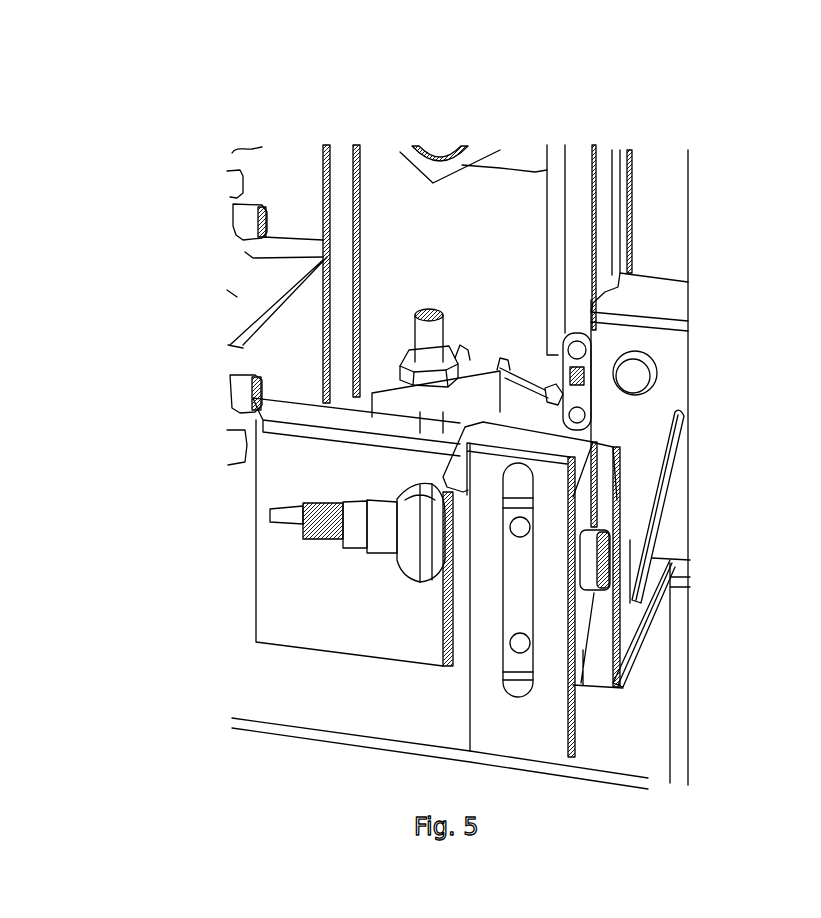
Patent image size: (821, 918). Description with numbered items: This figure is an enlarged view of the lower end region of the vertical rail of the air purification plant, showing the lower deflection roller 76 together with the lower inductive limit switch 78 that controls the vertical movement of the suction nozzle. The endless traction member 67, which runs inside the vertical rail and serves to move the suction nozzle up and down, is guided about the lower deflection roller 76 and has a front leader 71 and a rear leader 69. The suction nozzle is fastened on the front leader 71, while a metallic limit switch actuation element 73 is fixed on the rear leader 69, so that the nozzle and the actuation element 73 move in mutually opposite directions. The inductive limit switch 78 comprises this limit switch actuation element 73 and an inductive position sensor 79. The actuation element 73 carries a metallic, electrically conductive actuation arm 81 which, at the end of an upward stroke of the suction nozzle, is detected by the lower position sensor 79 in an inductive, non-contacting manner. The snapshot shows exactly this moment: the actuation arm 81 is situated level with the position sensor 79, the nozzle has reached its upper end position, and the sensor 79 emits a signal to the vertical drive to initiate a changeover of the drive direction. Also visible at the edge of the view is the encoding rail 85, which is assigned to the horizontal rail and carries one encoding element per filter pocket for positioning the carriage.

The endless traction member 67 is at (582, 255).
The rear leader 69 is at (580, 210).
The front leader 71 is at (340, 280).
The limit switch actuation element 73 is at (640, 423).
The lower deflection roller 76 is at (590, 400).
The lower inductive limit switch 78 is at (377, 532).
The inductive position sensor 79 is at (580, 557).
The actuation arm 81 is at (647, 523).
The encoding rail 85 is at (754, 459).